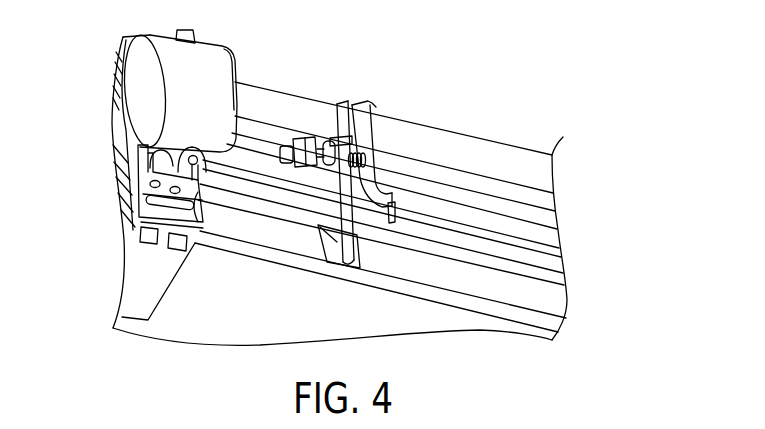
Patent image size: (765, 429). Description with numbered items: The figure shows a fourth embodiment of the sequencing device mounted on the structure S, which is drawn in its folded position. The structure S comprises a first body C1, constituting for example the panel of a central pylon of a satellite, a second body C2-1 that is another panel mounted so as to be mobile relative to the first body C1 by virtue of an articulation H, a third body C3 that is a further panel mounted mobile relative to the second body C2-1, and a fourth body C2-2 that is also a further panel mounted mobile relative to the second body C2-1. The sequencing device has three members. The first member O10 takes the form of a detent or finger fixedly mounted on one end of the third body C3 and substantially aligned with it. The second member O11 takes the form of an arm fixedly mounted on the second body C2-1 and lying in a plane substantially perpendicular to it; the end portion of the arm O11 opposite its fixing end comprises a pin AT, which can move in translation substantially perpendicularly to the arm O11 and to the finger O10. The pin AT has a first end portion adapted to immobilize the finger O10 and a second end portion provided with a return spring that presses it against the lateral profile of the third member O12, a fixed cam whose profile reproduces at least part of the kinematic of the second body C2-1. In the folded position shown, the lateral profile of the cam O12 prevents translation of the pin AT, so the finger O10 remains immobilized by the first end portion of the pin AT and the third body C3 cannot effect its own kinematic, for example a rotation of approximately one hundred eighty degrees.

The structure S is at (462, 92).
The first body C1 is at (554, 153).
The third body C3 is at (545, 227).
The fourth body C2-2 is at (543, 261).
The second body C2-1 is at (555, 320).
The articulation H is at (114, 139).
The first member (finger) O10 is at (300, 147).
The second member (arm) O11 is at (339, 207).
The third member (fixed cam) O12 is at (380, 189).
The pin AT is at (373, 141).